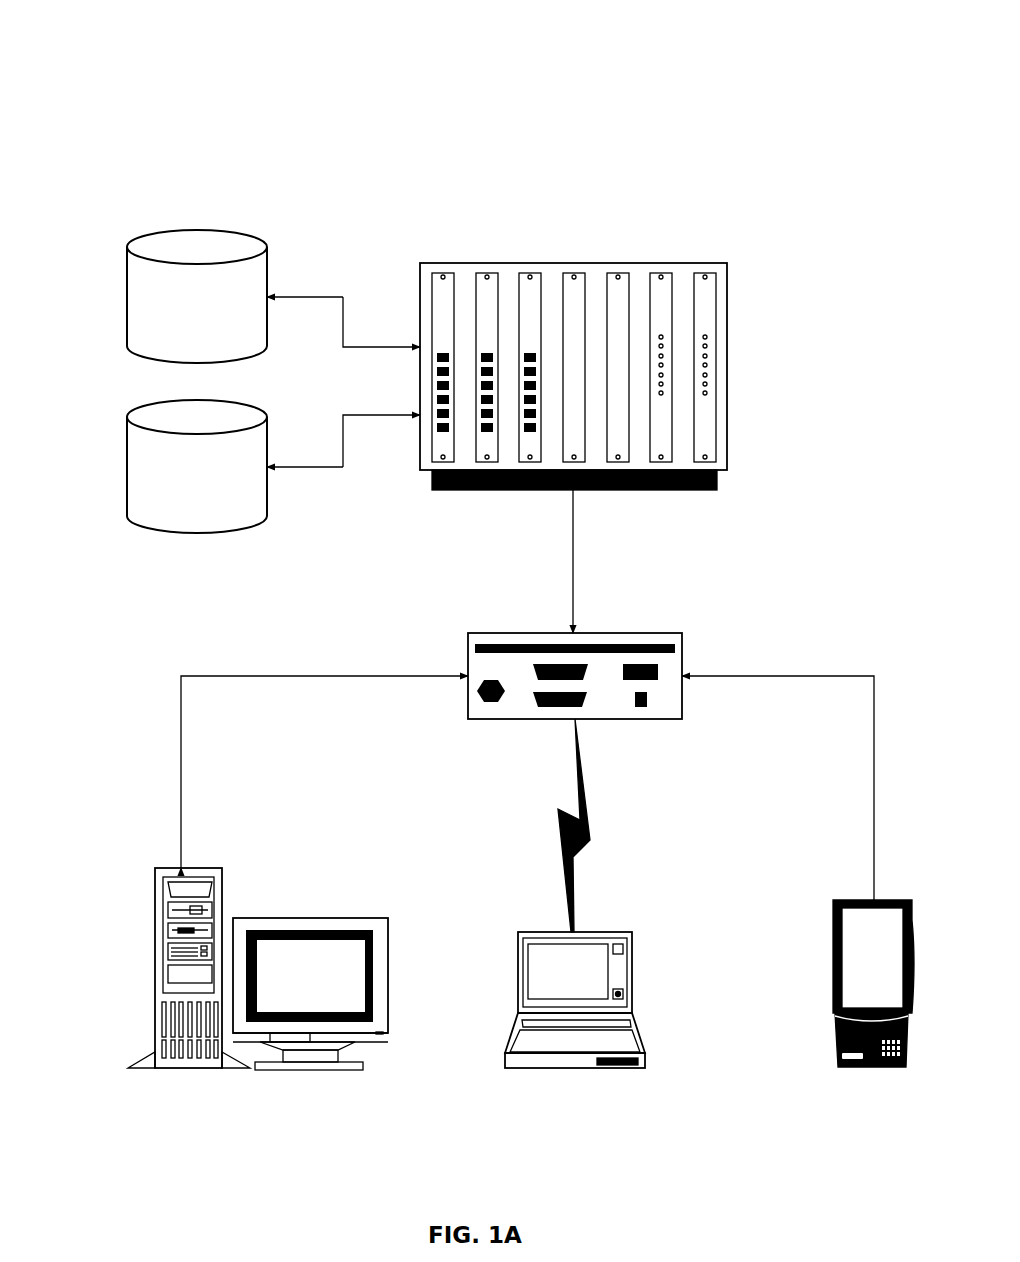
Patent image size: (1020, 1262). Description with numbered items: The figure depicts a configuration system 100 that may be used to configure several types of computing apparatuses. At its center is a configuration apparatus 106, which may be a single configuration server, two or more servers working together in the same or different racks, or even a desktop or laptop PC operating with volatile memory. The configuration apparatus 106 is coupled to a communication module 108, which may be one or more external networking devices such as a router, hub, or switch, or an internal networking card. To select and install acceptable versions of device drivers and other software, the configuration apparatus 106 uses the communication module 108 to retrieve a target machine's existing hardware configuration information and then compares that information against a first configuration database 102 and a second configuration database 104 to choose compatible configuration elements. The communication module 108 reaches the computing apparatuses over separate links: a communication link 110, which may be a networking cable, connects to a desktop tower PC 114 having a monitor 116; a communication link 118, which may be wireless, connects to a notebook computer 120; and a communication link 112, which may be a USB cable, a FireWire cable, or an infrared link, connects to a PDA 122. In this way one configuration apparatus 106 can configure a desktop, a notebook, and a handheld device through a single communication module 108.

The configuration system 100 is at (143, 68).
The first configuration database 102 is at (163, 231).
The second configuration database 104 is at (163, 400).
The configuration apparatus 106 is at (573, 263).
The communication module 108 is at (522, 632).
The communication link 110 is at (285, 676).
The communication link 112 is at (851, 675).
The desktop tower PC 114 is at (162, 866).
The monitor 116 is at (352, 917).
The communication link 118 is at (562, 844).
The notebook computer 120 is at (540, 932).
The PDA 122 is at (848, 898).